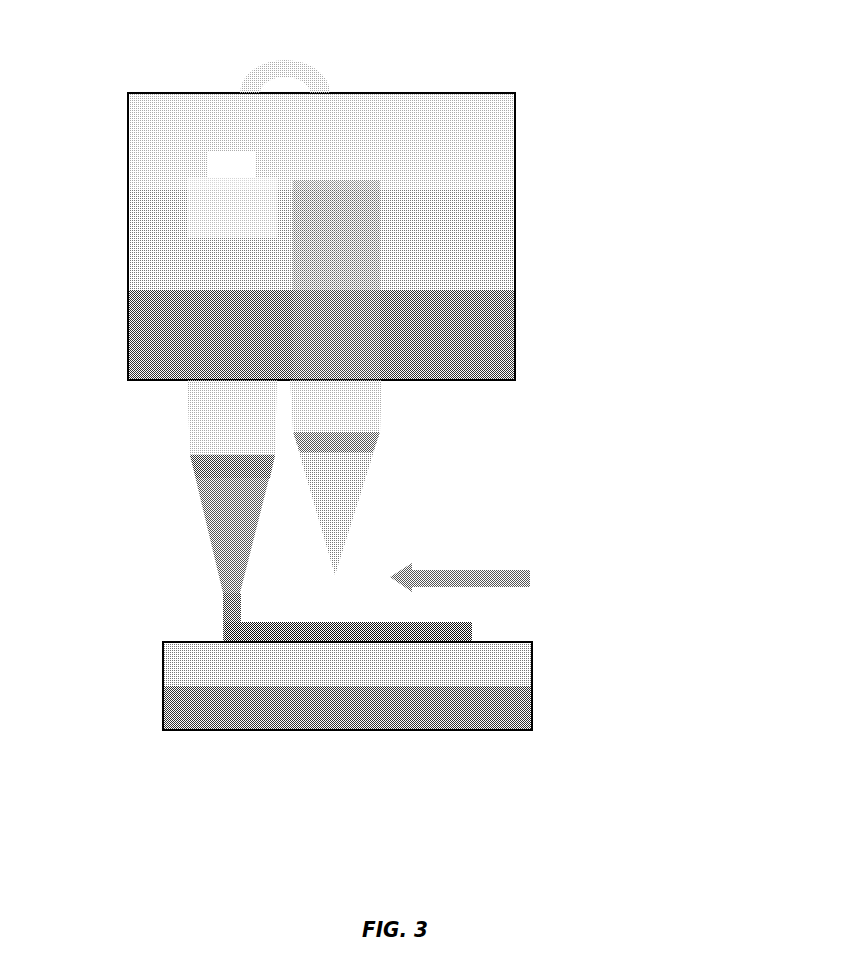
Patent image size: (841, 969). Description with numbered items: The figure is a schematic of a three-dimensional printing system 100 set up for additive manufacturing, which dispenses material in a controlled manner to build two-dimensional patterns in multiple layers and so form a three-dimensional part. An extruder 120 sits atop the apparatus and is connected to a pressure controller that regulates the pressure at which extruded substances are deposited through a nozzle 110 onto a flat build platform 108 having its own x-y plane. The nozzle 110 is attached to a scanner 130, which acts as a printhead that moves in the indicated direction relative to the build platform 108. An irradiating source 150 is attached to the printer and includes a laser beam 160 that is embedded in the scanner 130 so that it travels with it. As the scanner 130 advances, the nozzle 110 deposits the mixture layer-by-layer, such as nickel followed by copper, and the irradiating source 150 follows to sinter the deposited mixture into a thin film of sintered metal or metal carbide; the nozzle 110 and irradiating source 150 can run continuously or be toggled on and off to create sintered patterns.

The three-dimensional printing system 100 is at (383, 373).
The build platform 108 is at (494, 701).
The nozzle 110 is at (195, 498).
The extruder 120 is at (265, 73).
The scanner 130 is at (511, 282).
The irradiating source 150 is at (354, 337).
The laser beam 160 is at (326, 468).